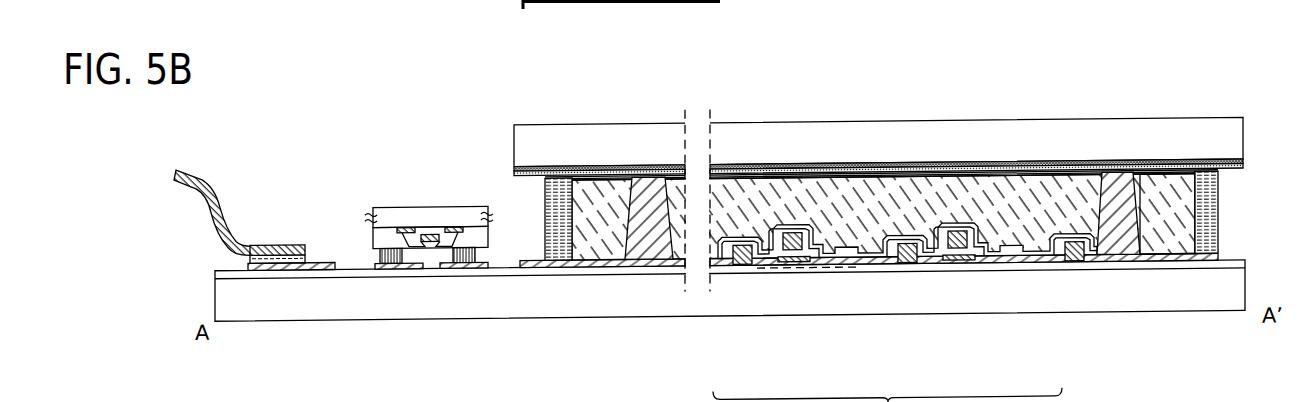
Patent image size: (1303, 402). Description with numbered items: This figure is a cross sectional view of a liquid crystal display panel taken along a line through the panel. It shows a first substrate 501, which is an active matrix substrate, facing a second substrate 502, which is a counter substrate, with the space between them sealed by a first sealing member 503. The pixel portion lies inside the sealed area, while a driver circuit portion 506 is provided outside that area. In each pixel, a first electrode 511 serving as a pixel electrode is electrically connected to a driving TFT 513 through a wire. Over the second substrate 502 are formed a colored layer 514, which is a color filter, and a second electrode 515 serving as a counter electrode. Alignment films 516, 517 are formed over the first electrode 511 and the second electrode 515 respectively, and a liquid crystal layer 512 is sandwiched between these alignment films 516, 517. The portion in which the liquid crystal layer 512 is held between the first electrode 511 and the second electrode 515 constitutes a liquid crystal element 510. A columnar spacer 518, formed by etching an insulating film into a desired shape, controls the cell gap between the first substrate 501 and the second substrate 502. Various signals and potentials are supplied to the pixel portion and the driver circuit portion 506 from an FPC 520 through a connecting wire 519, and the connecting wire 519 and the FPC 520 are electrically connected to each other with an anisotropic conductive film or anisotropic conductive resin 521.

In FIG. 5B, the first substrate 501 is at (730, 331).
In FIG. 5B, the second substrate 502 is at (878, 118).
In FIG. 5B, the first sealing member 503 is at (824, 244).
In FIG. 5B, the driver circuit portion 506 is at (505, 329).
In FIG. 5B, the liquid crystal element 510 is at (883, 128).
In FIG. 5B, the first electrode 511 is at (883, 266).
In FIG. 5B, the liquid crystal layer 512 is at (890, 146).
In FIG. 5B, the driving TFT 513 is at (801, 312).
In FIG. 5B, the colored layer 514 is at (878, 85).
In FIG. 5B, the second electrode 515 is at (878, 116).
In FIG. 5B, the alignment film 516 is at (907, 288).
In FIG. 5B, the alignment film 517 is at (881, 109).
In FIG. 5B, the columnar spacer 518 is at (1193, 146).
In FIG. 5B, the connecting wire 519 is at (291, 315).
In FIG. 5A, the FPC 520 is at (482, 6).
In FIG. 5B, the FPC 520 is at (210, 213).
In FIG. 5B, the anisotropic conductive film or anisotropic conductive resin 521 is at (262, 197).